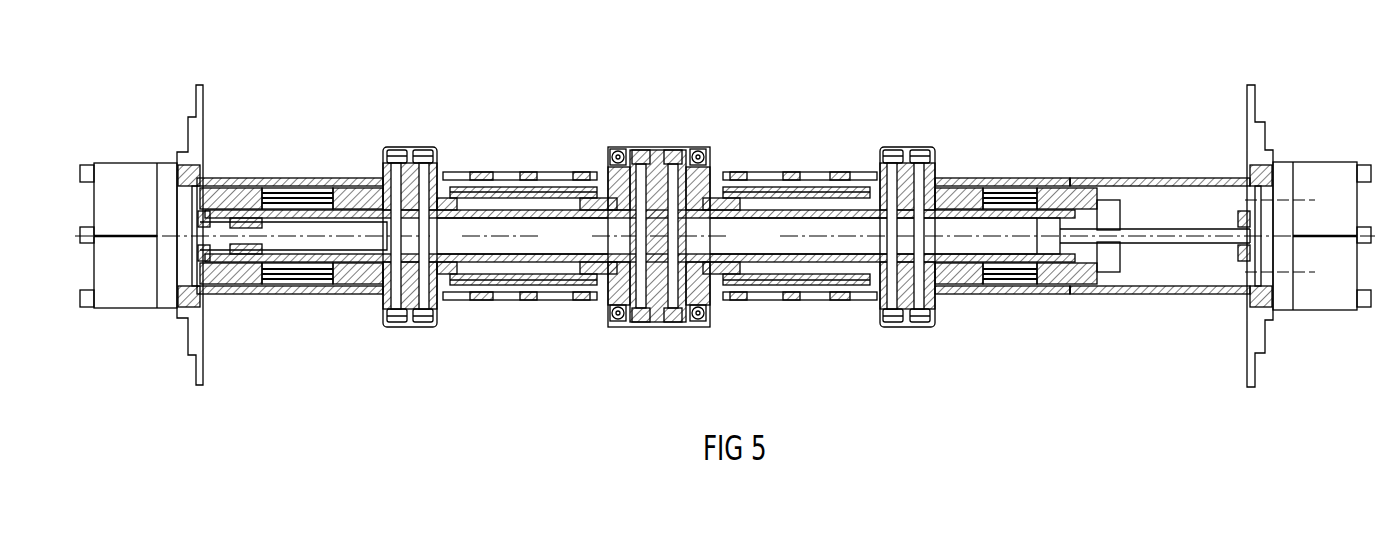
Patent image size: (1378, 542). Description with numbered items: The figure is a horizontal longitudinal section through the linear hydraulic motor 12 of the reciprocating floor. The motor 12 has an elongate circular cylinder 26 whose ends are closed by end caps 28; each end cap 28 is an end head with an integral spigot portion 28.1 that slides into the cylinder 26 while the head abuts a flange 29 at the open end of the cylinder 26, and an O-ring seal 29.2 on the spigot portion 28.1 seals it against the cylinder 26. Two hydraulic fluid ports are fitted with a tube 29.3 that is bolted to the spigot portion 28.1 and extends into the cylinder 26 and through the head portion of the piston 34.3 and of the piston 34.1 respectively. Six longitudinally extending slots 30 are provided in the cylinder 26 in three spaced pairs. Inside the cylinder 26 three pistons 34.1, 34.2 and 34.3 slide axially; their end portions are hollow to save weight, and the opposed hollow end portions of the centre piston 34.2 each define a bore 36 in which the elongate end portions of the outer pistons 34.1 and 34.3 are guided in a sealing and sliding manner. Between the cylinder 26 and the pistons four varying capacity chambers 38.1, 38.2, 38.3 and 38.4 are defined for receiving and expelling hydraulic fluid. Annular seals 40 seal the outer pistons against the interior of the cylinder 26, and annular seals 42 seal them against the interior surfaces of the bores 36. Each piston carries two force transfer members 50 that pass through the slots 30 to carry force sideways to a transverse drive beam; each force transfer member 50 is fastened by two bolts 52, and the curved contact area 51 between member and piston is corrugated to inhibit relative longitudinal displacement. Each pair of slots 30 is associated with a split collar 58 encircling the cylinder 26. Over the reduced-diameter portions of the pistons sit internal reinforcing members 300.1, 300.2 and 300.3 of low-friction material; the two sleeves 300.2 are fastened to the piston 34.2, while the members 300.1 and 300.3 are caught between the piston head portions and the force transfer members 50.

The linear hydraulic motor 12 is at (863, 92).
The elongate circular cylinder 26 is at (1148, 178).
The end cap 28 is at (121, 170).
The spigot portion 28.1 is at (188, 200).
The flange 29 is at (203, 345).
The O-ring seal 29.2 is at (190, 280).
The tube 29.3 is at (272, 195).
The longitudinally extending slot 30 is at (442, 180).
The piston 34.1 is at (940, 285).
The piston 34.2 is at (613, 185).
The piston 34.3 is at (322, 265).
The bore 36 is at (503, 205).
The varying capacity chamber 38.1 is at (1148, 270).
The varying capacity chamber 38.2 is at (885, 236).
The varying capacity chamber 38.3 is at (632, 230).
The varying capacity chamber 38.4 is at (195, 250).
The annular hydraulic fluid seal 40 is at (240, 180).
The annular hydraulic fluid seal 42 is at (732, 290).
The force transfer member 50 is at (387, 162).
The curved contact area 51 is at (676, 178).
The bolt 52 is at (423, 150).
The split collar 58 is at (488, 178).
The internal reinforcing member 300.1 is at (1018, 188).
The internal reinforcing member 300.2 is at (818, 178).
The internal reinforcing member 300.3 is at (262, 185).